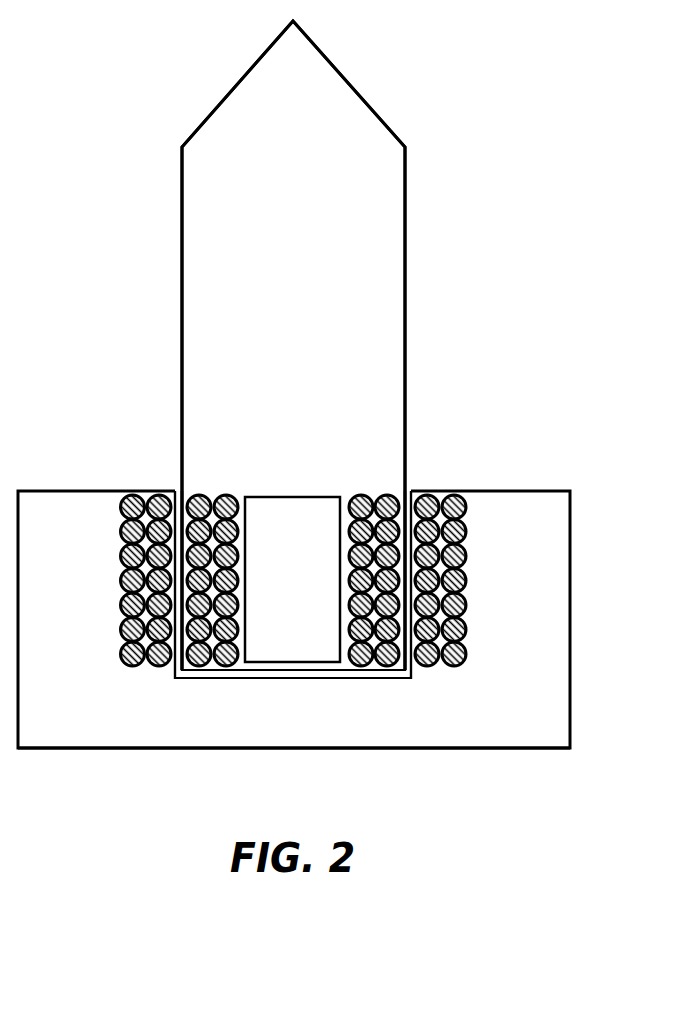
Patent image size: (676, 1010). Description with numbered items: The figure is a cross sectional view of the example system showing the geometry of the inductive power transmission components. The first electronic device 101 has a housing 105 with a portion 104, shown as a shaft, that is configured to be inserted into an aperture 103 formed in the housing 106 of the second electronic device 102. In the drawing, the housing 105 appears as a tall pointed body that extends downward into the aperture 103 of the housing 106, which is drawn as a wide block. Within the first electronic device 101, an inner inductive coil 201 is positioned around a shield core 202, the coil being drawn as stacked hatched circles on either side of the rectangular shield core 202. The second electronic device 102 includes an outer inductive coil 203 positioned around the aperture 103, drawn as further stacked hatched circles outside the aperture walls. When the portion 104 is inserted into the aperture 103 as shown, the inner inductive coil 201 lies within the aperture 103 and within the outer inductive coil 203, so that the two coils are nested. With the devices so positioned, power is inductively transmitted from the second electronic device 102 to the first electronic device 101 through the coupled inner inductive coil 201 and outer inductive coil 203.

The first electronic device 101 is at (418, 268).
The second electronic device 102 is at (509, 756).
The aperture 103 is at (409, 490).
The portion 104 is at (176, 480).
The housing 105 is at (407, 347).
The housing 106 is at (294, 750).
The inner inductive coil 201 is at (211, 496).
The shield core 202 is at (269, 496).
The outer inductive coil 203 is at (144, 497).